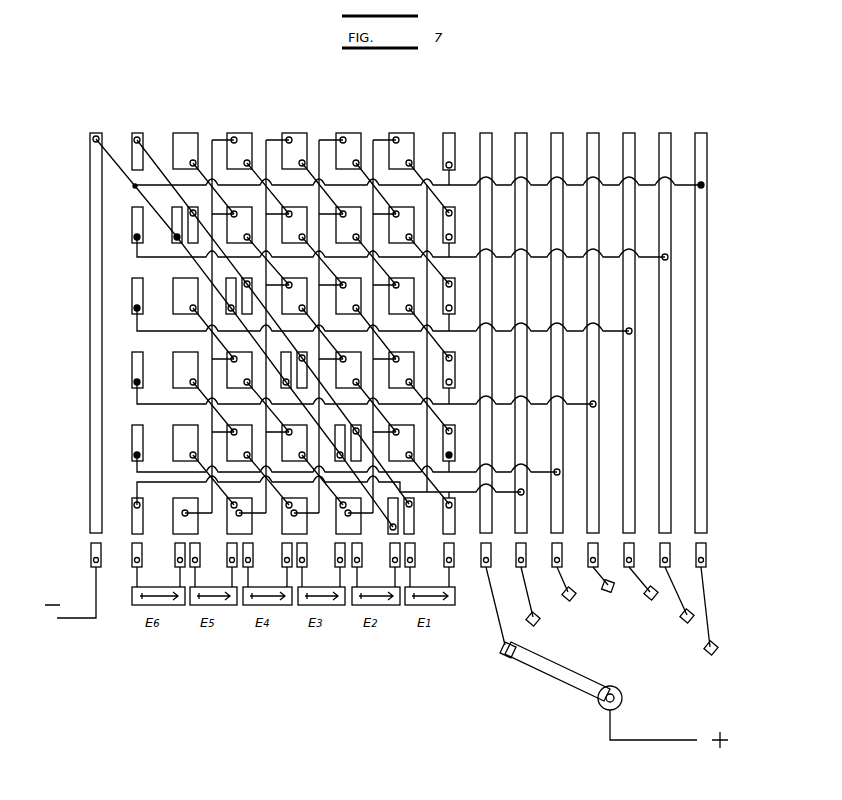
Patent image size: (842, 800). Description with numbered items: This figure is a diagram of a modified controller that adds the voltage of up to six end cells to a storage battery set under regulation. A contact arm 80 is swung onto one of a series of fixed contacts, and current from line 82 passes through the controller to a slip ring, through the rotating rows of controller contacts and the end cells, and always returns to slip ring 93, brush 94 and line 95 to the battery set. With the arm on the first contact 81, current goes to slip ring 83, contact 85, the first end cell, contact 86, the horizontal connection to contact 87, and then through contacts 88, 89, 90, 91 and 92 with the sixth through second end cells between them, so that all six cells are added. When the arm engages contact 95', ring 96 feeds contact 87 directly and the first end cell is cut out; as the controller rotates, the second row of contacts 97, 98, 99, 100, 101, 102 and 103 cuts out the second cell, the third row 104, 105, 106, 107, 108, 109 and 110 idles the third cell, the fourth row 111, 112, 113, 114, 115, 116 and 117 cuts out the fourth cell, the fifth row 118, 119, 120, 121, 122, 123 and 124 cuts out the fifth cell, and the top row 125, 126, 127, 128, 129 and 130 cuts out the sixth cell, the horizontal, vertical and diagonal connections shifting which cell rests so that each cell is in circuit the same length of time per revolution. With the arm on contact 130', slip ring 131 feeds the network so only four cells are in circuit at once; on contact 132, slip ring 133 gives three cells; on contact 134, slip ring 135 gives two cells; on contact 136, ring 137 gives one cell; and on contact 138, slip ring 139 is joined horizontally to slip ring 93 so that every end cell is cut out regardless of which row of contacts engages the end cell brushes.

The contact arm 80 is at (575, 678).
The first contact 81 is at (504, 660).
The line 82 is at (666, 748).
The slip ring 83 is at (515, 521).
The contact 85 is at (443, 521).
The contact 86 is at (480, 521).
The contact 87 is at (132, 518).
The contact 88 is at (173, 521).
The contact 89 is at (227, 523).
The contact 90 is at (282, 524).
The contact 91 is at (336, 525).
The contact 92 is at (388, 525).
The slip ring 93 is at (90, 411).
The brush 94 is at (90, 557).
The line 95 is at (70, 612).
The contact 95' is at (538, 606).
The ring 96 is at (525, 492).
The contact 97 is at (414, 441).
The contact 98 is at (455, 441).
The contact 99 is at (132, 446).
The contact 100 is at (173, 446).
The contact 101 is at (237, 425).
The contact 102 is at (292, 425).
The contact 103 is at (339, 425).
The contact 104 is at (347, 352).
The contact 105 is at (400, 352).
The contact 106 is at (455, 358).
The contact 107 is at (132, 372).
The contact 108 is at (173, 372).
The contact 109 is at (237, 352).
The contact 110 is at (285, 352).
The contact 111 is at (295, 278).
The contact 112 is at (347, 278).
The contact 113 is at (400, 278).
The contact 114 is at (455, 294).
The contact 115 is at (132, 298).
The contact 116 is at (173, 298).
The contact 117 is at (233, 278).
The contact 118 is at (250, 204).
The contact 119 is at (305, 204).
The contact 120 is at (347, 207).
The contact 121 is at (400, 207).
The contact 122 is at (455, 222).
The contact 123 is at (132, 222).
The contact 124 is at (180, 204).
The contact 125 is at (186, 135).
The contact 126 is at (242, 110).
The contact 127 is at (296, 135).
The contact 128 is at (350, 135).
The contact 129 is at (403, 135).
The contact 130 is at (455, 141).
The contact 130' is at (578, 594).
The slip ring 131 is at (558, 433).
The contact 132 is at (610, 592).
The slip ring 133 is at (595, 369).
The contact 134 is at (649, 600).
The slip ring 135 is at (631, 313).
The contact 136 is at (684, 623).
The ring 137 is at (667, 246).
The contact 138 is at (709, 656).
The slip ring 139 is at (709, 211).